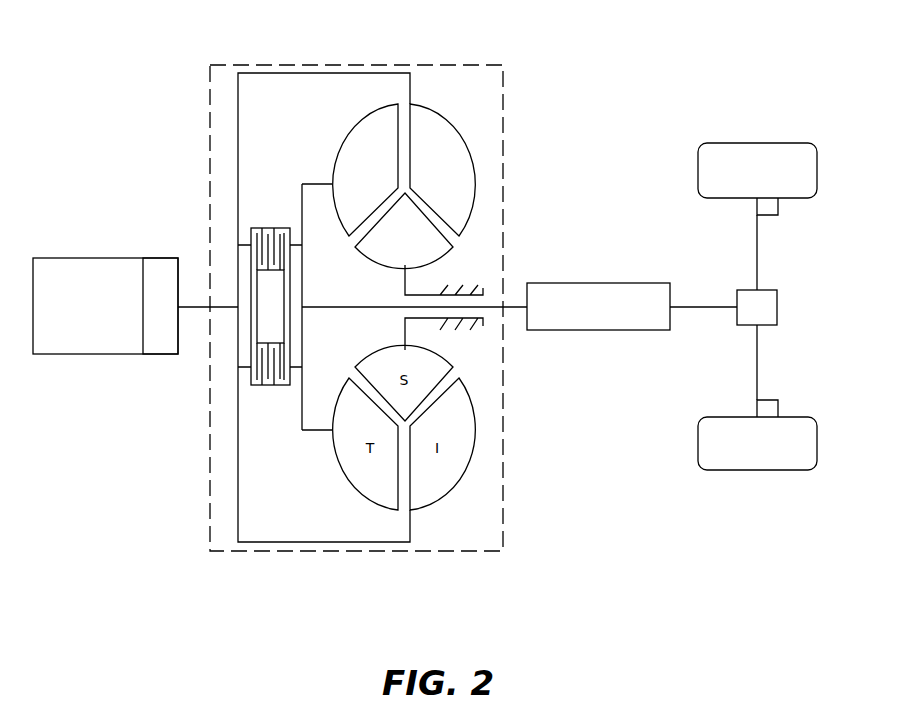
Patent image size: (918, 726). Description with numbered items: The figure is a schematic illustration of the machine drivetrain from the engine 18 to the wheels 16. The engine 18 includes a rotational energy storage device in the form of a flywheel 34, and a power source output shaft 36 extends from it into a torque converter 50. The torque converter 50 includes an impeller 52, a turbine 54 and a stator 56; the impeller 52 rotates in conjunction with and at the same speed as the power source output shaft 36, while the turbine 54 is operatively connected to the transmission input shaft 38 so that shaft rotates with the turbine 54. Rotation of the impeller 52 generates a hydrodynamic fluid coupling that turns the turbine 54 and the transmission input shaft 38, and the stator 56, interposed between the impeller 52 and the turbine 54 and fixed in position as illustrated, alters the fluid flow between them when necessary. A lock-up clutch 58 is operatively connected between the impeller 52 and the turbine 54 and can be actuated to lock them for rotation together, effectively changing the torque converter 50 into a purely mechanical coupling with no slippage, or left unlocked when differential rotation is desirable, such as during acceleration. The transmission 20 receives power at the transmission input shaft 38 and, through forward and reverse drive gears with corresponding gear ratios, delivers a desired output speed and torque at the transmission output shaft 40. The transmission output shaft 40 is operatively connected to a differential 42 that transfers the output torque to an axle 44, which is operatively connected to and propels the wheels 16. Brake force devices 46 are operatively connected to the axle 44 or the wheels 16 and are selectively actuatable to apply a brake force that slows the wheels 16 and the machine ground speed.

The wheels 16 is at (760, 143).
The engine 18 is at (93, 258).
The transmission 20 is at (583, 283).
The flywheel 34 is at (160, 258).
The power source output shaft 36 is at (197, 308).
The transmission input shaft 38 is at (515, 308).
The transmission output shaft 40 is at (718, 306).
The differential 42 is at (778, 304).
The axle 44 is at (757, 363).
The brake force devices 46 is at (768, 216).
The torque converter 50 is at (395, 62).
The impeller 52 is at (453, 145).
The turbine 54 is at (360, 150).
The stator 56 is at (430, 250).
The lock-up clutch 58 is at (273, 230).